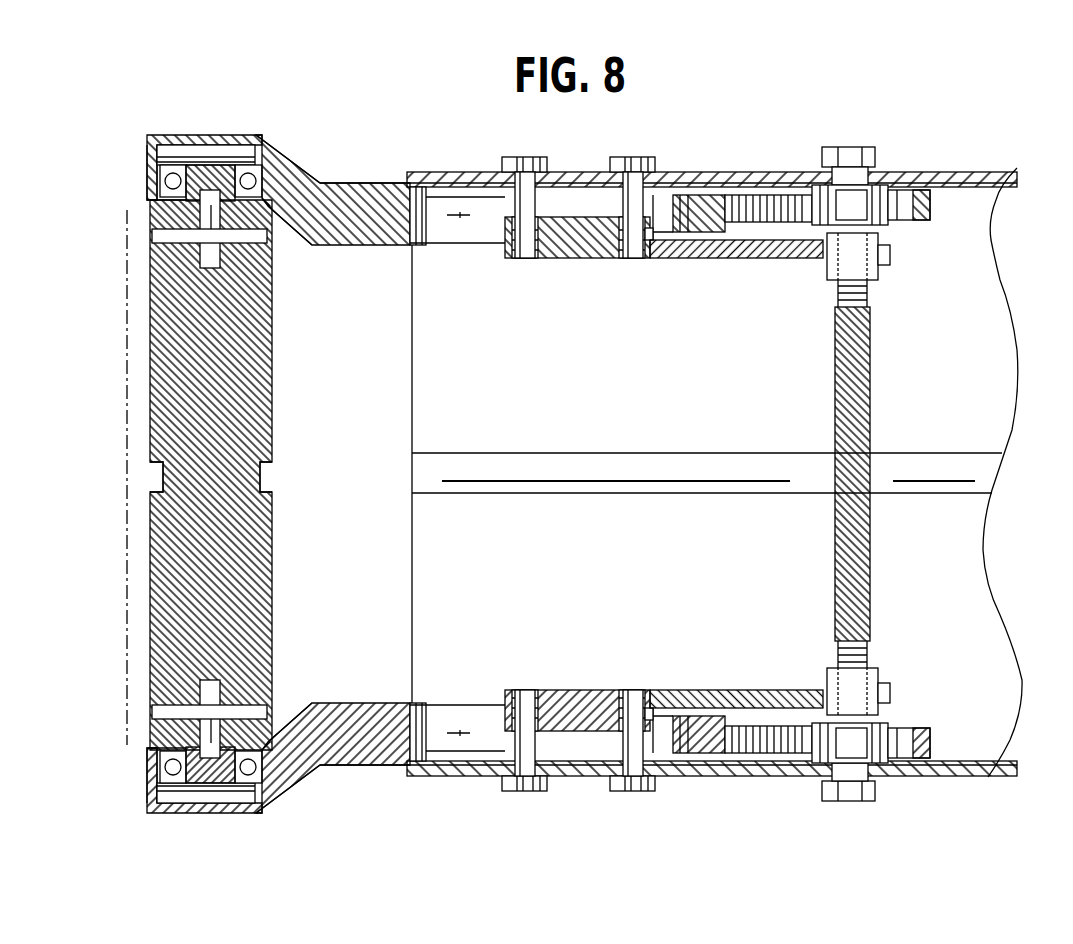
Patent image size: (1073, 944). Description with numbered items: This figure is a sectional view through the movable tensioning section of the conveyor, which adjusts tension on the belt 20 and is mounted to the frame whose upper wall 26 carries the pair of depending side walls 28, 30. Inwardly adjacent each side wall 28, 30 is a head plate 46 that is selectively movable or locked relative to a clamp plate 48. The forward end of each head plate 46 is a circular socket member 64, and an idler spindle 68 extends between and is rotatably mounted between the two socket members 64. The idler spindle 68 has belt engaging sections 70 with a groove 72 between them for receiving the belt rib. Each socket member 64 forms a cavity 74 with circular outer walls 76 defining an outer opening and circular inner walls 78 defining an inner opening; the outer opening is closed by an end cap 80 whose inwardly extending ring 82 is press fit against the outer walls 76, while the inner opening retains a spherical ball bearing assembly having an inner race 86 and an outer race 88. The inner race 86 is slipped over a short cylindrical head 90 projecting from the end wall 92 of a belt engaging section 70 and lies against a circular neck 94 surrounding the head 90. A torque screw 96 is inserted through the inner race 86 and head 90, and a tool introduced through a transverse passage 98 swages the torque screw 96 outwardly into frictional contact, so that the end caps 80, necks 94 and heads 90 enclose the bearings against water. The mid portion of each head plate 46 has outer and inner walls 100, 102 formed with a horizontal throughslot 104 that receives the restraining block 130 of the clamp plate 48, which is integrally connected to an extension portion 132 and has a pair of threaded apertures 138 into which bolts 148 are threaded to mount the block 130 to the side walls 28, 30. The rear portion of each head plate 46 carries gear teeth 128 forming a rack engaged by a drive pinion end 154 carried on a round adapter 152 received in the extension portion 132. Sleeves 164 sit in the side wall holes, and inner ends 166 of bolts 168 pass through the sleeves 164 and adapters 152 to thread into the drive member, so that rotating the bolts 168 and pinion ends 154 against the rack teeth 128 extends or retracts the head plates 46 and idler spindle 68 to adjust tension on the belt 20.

The belt 20 is at (140, 478).
The upper wall 26 is at (605, 556).
The side wall 28 is at (982, 780).
The side wall 30 is at (1008, 172).
The head plate 46 is at (380, 480).
The clamp plate 48 is at (806, 469).
The circular socket member 64 is at (172, 477).
The idler spindle 68 is at (250, 475).
The belt engaging sections 70 is at (240, 360).
The groove 72 is at (262, 486).
The cavity 74 is at (149, 148).
The circular outer walls 76 is at (268, 150).
The circular inner walls 78 is at (150, 173).
The end cap 80 is at (210, 143).
The inwardly extending ring 82 is at (173, 140).
The inner race 86 is at (180, 166).
The outer race 88 is at (286, 165).
The cylindrical heads 90 is at (226, 147).
The end walls 92 is at (255, 207).
The circular necks 94 is at (150, 201).
The torque screws 96 is at (232, 235).
The passage 98 is at (150, 236).
The outer wall 100 is at (363, 183).
The inner wall 102 is at (360, 246).
The horizontal throughslot 104 is at (462, 210).
The gear teeth 128 is at (745, 195).
The restraining block 130 is at (575, 260).
The extension portion 132 is at (808, 260).
The threaded apertures 138 is at (518, 260).
The bolts 148 is at (626, 157).
The round adapter 152 is at (878, 270).
The drive pinion end 154 is at (895, 188).
The sleeves 164 is at (824, 182).
The inner ends 166 is at (868, 310).
The bolts 168 is at (848, 160).